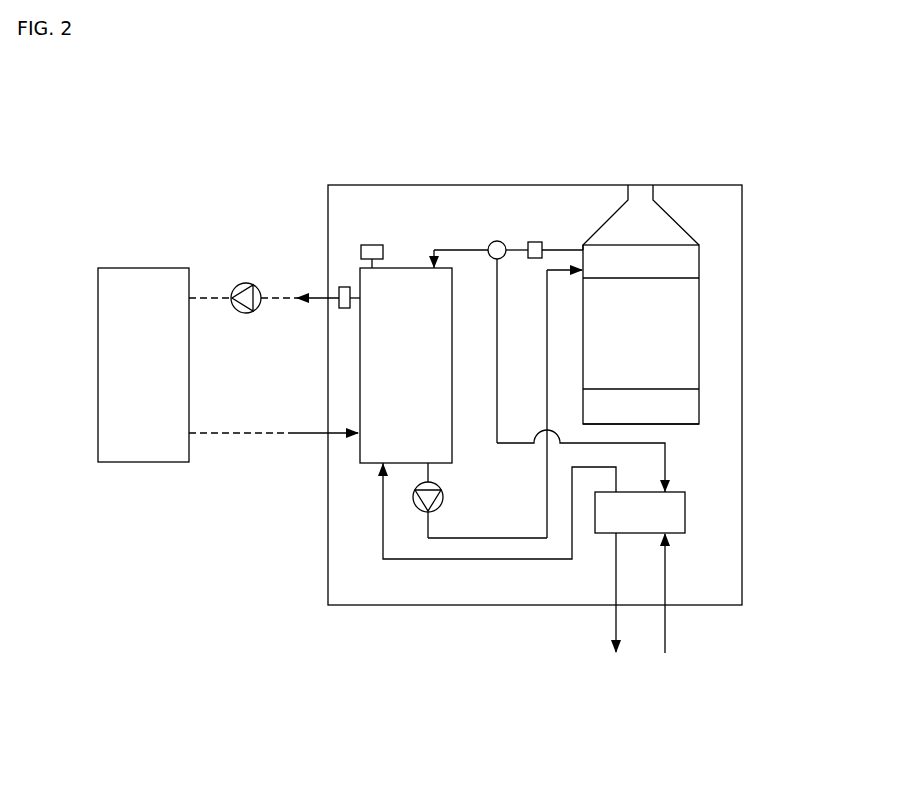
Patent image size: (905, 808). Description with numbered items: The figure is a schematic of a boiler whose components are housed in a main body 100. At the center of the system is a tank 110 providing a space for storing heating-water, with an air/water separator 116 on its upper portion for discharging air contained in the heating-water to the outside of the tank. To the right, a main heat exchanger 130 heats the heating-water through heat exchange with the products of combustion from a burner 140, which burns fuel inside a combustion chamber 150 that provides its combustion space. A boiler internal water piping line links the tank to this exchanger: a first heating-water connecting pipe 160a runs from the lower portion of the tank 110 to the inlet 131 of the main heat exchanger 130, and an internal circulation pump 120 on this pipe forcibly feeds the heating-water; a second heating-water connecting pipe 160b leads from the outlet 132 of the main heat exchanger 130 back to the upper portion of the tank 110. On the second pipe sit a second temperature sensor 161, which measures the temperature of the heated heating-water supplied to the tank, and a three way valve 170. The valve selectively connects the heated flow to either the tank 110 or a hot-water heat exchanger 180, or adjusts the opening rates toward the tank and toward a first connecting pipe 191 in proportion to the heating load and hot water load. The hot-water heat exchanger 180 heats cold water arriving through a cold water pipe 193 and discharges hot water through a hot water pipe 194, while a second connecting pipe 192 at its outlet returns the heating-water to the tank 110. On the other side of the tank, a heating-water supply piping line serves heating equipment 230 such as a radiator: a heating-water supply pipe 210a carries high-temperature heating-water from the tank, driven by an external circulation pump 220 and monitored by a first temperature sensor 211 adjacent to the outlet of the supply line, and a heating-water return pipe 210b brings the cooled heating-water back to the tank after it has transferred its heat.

The main body 100 is at (698, 178).
The tank 110 is at (403, 260).
The air/water separator 116 is at (372, 244).
The internal circulation pump 120 is at (443, 497).
The main heat exchanger 130 is at (692, 263).
The inlet 131 is at (577, 275).
The outlet 132 is at (583, 246).
The burner 140 is at (687, 404).
The combustion chamber 150 is at (692, 333).
The first heating-water connecting pipe 160a is at (478, 538).
The second heating-water connecting pipe 160b is at (458, 250).
The second temperature sensor 161 is at (535, 242).
The three way valve 170 is at (497, 241).
The hot-water heat exchanger 180 is at (686, 510).
The first connecting pipe 191 is at (497, 382).
The second connecting pipe 192 is at (412, 559).
The cold water pipe 193 is at (665, 618).
The hot water pipe 194 is at (612, 622).
The heating-water supply pipe 210a is at (278, 300).
The heating-water return pipe 210b is at (250, 433).
The first temperature sensor 211 is at (343, 285).
The external circulation pump 220 is at (247, 283).
The heating equipment 230 is at (142, 268).